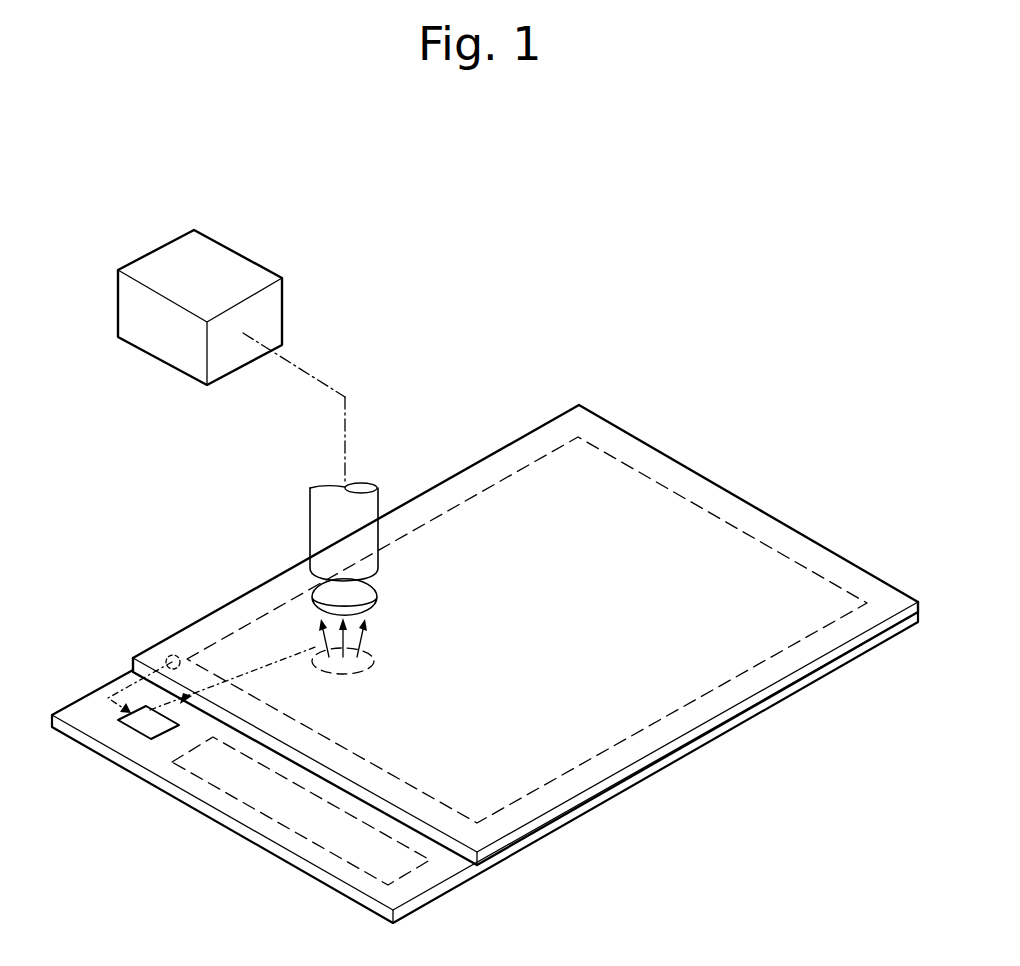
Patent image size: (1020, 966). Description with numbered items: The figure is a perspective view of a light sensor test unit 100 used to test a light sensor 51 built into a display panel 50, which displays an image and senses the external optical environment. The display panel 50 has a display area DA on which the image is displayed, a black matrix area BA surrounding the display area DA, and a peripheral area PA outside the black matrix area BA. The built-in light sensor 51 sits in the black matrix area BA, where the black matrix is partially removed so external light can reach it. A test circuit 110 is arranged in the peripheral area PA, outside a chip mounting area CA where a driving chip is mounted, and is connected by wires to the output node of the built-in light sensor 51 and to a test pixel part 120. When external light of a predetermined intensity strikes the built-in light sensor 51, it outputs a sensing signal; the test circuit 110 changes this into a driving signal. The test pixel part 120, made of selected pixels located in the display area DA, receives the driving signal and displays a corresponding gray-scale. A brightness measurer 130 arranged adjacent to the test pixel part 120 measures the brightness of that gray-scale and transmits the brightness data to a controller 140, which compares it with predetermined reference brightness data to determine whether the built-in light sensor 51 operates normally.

The light sensor test unit 100 is at (700, 273).
The display panel 50 is at (672, 453).
The built-in light sensor 51 is at (171, 656).
The test circuit 110 is at (140, 717).
The test pixel part 120 is at (314, 643).
The brightness measurer 130 is at (327, 497).
The controller 140 is at (213, 270).
The peripheral area PA is at (98, 711).
The black matrix area BA is at (478, 483).
The display area DA is at (552, 502).
The chip mounting area CA is at (312, 830).